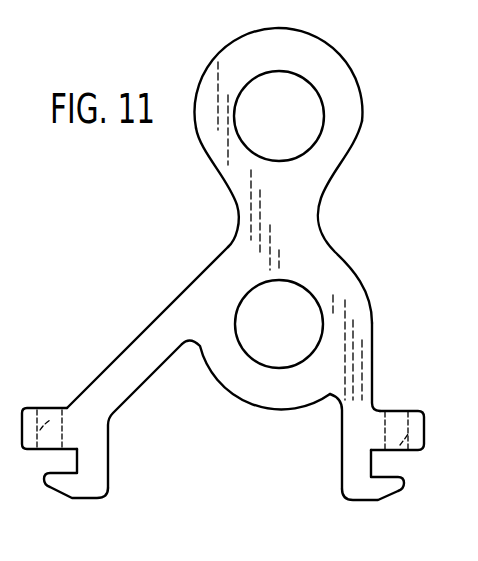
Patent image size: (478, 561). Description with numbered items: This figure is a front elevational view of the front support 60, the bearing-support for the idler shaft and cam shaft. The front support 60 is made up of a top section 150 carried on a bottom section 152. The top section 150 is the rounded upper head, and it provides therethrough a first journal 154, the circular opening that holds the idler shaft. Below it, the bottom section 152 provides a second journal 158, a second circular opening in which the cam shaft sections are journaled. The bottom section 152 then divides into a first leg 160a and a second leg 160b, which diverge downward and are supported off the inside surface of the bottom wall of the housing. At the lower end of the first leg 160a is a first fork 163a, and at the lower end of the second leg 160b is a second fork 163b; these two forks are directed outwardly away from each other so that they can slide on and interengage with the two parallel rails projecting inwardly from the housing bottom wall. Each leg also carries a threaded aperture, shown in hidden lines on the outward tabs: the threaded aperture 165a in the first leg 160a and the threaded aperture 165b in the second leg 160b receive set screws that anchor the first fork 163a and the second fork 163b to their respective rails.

The front support 60 is at (206, 55).
The top section 150 is at (304, 85).
The bottom section 152 is at (242, 396).
The first journal 154 is at (314, 122).
The second journal 158 is at (305, 296).
The first leg 160a is at (120, 396).
The second leg 160b is at (400, 433).
The first fork 163a is at (92, 490).
The second fork 163b is at (370, 490).
The threaded aperture 165a is at (48, 417).
The threaded aperture 165b is at (401, 458).